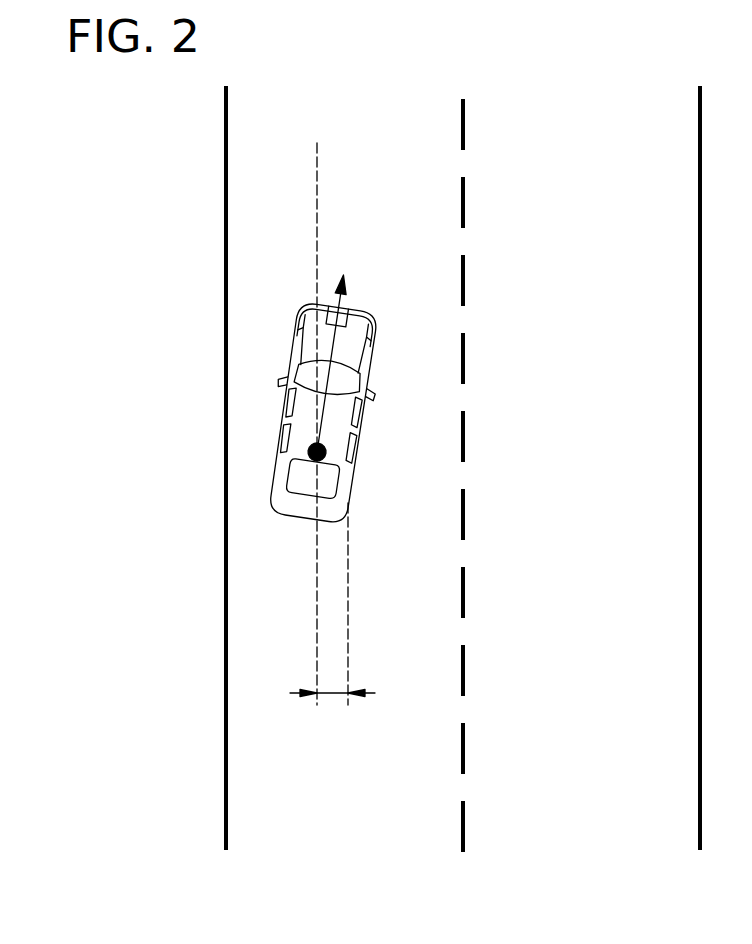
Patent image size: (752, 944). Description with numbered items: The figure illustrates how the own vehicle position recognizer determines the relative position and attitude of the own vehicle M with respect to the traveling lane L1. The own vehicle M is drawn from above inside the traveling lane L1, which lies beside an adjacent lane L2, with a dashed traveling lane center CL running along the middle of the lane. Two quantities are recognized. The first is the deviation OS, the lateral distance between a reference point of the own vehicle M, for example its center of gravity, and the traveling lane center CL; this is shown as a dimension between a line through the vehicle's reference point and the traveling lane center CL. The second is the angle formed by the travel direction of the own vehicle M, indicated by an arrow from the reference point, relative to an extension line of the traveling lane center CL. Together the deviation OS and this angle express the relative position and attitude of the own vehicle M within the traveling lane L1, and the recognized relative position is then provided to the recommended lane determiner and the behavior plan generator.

The own vehicle M is at (279, 429).
The traveling lane center CL is at (348, 590).
The deviation OS is at (332, 714).
The traveling lane L1 is at (341, 818).
The second lane L2 is at (585, 818).